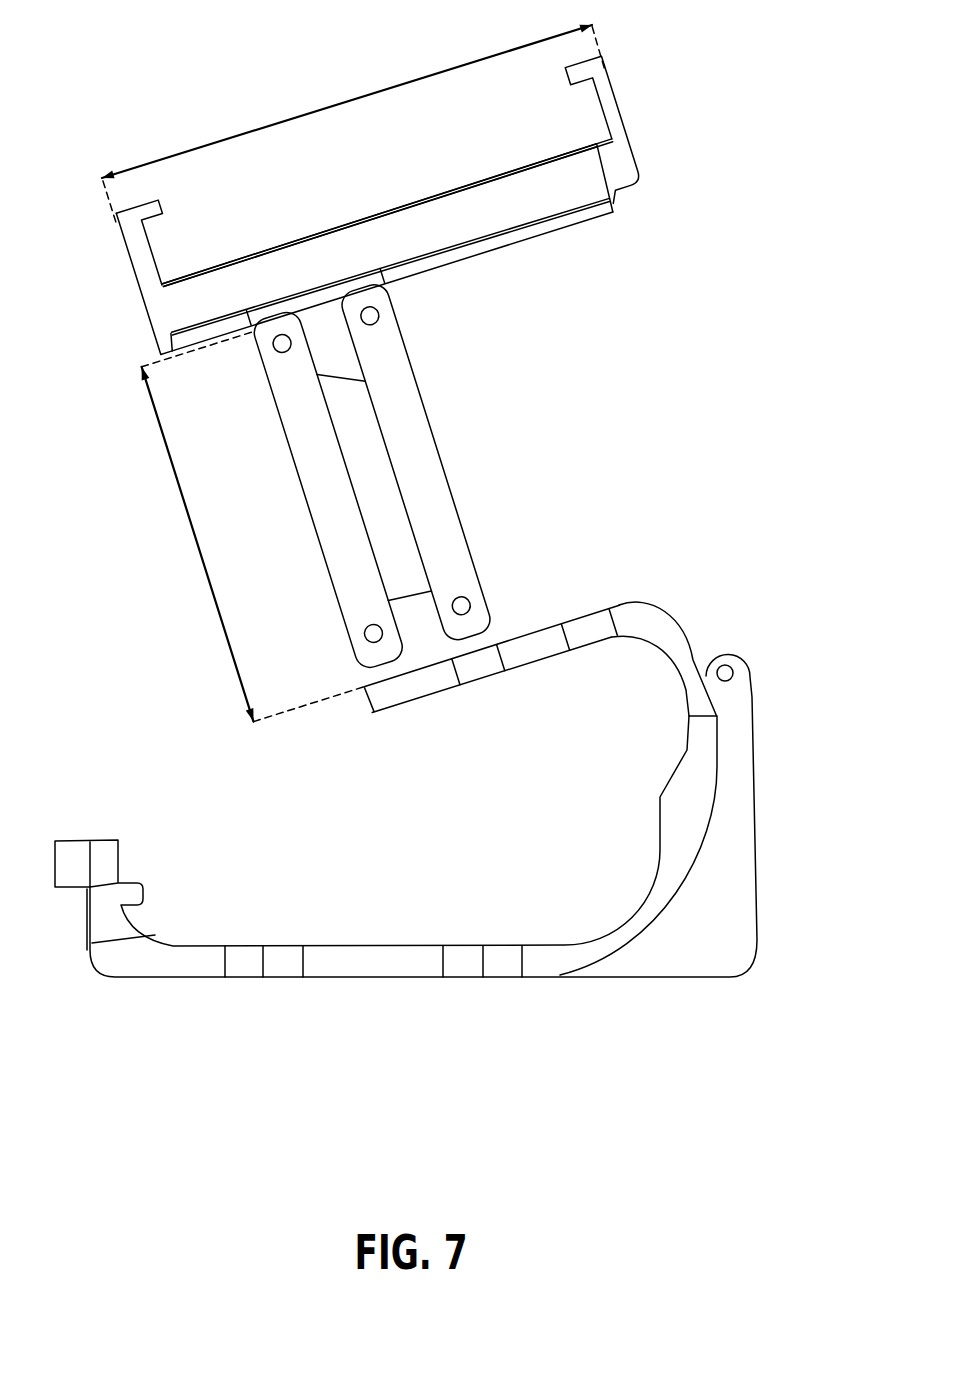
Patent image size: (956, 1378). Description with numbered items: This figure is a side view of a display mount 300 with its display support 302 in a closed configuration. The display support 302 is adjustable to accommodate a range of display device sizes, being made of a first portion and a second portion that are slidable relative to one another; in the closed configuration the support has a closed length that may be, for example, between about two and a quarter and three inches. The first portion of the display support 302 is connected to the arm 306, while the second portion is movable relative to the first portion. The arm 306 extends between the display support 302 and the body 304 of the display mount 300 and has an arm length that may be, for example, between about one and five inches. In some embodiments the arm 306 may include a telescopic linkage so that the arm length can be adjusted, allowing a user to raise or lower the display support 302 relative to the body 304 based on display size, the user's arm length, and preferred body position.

The display mount 300 is at (747, 131).
The display support 302 is at (500, 268).
The body 304 is at (583, 622).
The arm 306 is at (420, 441).